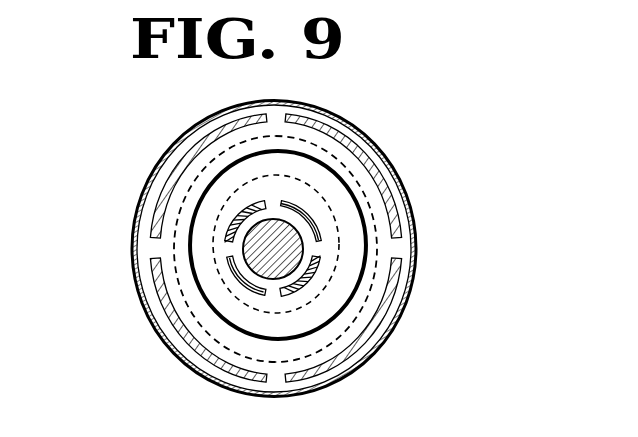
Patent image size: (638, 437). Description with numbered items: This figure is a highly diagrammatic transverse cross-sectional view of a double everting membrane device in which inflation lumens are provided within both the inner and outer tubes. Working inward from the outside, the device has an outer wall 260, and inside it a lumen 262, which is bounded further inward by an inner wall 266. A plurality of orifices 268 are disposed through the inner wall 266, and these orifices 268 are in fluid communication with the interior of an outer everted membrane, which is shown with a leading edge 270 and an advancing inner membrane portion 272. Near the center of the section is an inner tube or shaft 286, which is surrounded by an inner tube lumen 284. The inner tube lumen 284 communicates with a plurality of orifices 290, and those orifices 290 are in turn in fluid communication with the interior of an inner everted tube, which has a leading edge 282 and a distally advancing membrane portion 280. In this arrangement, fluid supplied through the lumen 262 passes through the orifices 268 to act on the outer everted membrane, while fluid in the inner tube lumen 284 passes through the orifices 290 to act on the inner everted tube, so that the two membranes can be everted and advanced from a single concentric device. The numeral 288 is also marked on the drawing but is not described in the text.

The outer wall 260 is at (323, 103).
The lumen 262 is at (357, 132).
The inner wall 266 is at (403, 238).
The orifices 268 is at (400, 245).
The leading edge 270 is at (377, 298).
The advancing inner membrane portion 272 is at (350, 320).
The distally advancing membrane portion 280 is at (237, 323).
The leading edge 282 is at (205, 273).
The inner tube lumen 284 is at (236, 268).
The inner tube or shaft 286 is at (237, 228).
The upper-right arcuate segment 288 is at (263, 210).
The orifices 290 is at (273, 205).